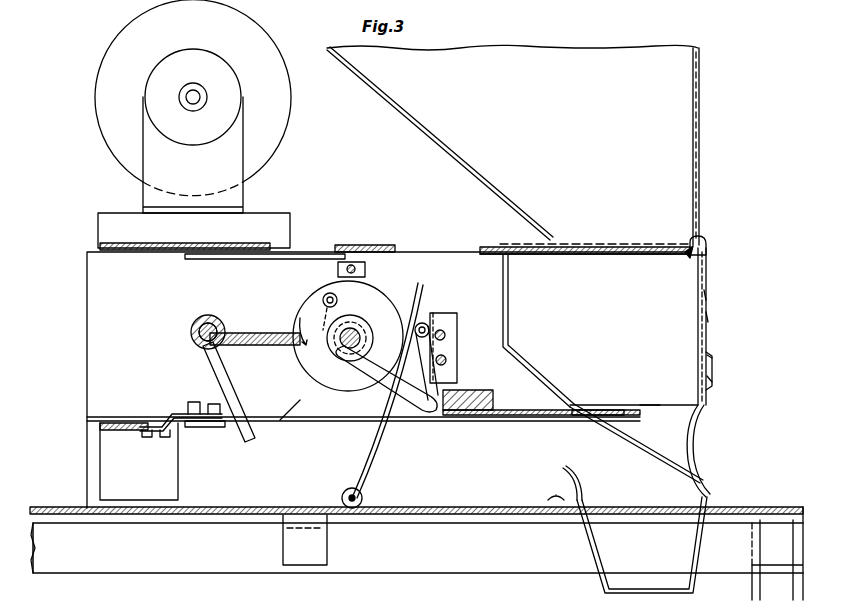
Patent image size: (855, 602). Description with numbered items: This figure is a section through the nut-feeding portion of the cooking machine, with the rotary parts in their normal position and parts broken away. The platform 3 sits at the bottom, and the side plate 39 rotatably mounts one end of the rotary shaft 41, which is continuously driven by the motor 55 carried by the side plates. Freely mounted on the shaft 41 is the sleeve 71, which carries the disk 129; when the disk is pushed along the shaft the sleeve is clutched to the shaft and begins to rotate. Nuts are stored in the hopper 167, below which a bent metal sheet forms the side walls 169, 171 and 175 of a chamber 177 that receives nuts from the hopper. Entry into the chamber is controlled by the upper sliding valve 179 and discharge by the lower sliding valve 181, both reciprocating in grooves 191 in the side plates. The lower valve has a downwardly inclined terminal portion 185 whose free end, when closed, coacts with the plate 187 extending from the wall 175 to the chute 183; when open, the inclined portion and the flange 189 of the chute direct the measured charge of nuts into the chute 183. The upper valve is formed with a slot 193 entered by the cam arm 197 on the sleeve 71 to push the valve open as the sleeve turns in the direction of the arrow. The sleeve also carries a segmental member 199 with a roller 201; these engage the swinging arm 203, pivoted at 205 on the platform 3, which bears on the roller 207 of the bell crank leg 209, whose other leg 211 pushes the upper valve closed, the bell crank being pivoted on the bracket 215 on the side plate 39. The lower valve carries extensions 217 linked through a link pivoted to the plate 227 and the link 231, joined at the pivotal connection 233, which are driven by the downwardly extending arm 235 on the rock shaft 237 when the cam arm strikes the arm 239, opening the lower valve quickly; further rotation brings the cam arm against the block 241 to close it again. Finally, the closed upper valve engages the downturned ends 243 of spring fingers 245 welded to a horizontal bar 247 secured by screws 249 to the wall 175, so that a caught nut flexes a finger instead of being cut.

The platform 3 is at (245, 507).
The side plate 39 is at (87, 327).
The rotary shaft 41 is at (330, 357).
The motor 55 is at (291, 128).
The sleeve 71 is at (352, 362).
The disk 129 is at (338, 270).
The hopper 167 is at (712, 130).
The side wall 169 is at (508, 335).
The side wall 171 is at (658, 400).
The wall 175 is at (698, 325).
The chamber 177 is at (708, 300).
The upper sliding valve 179 is at (572, 256).
The lower sliding valve 181 is at (500, 415).
The chute 183 is at (600, 556).
The inclined terminal portion 185 is at (617, 444).
The plate 187 is at (700, 455).
The flange 189 is at (565, 470).
The grooves 191 is at (222, 259).
The slot 193 is at (395, 252).
The cam arm 197 is at (332, 410).
The segmental member 199 is at (377, 300).
The roller 201 is at (322, 297).
The swinging arm 203 is at (386, 452).
The pivot 205 is at (343, 494).
The roller 207 is at (425, 324).
The leg of bell crank lever 209 is at (450, 350).
The leg of bell crank lever 211 is at (482, 303).
The bracket 215 is at (460, 323).
The extensions 217 is at (305, 417).
The plate 227 is at (100, 435).
The link 231 is at (190, 412).
The pivotal connection 233 is at (222, 424).
The arm 235 is at (215, 376).
The rock shaft 237 is at (191, 334).
The arm 239 is at (280, 333).
The block 241 is at (475, 395).
The downturned ends 243 is at (690, 252).
The spring fingers 245 is at (710, 318).
The horizontal bar 247 is at (712, 360).
The screws 249 is at (712, 380).